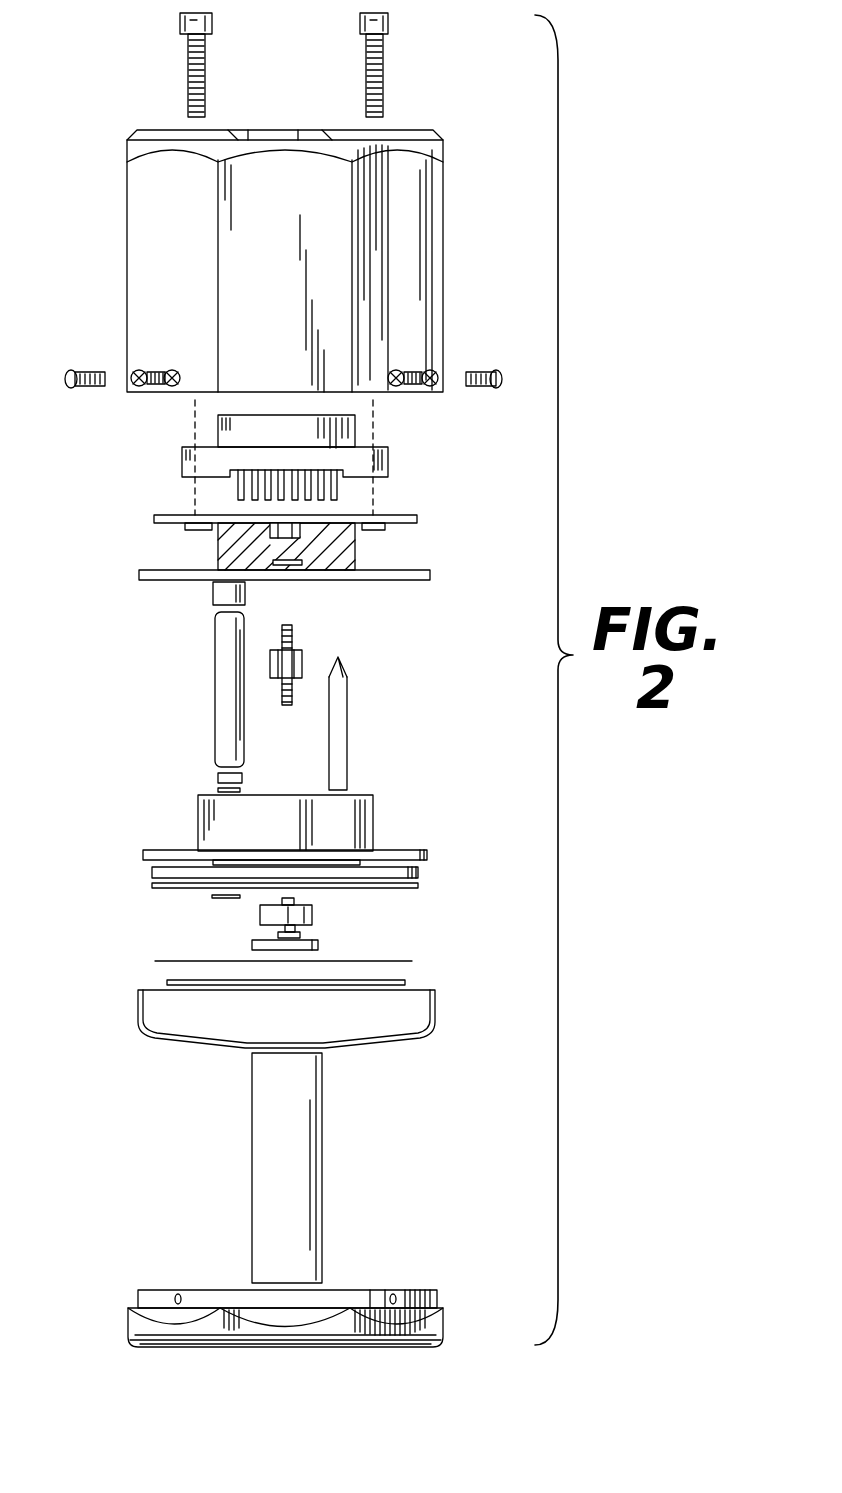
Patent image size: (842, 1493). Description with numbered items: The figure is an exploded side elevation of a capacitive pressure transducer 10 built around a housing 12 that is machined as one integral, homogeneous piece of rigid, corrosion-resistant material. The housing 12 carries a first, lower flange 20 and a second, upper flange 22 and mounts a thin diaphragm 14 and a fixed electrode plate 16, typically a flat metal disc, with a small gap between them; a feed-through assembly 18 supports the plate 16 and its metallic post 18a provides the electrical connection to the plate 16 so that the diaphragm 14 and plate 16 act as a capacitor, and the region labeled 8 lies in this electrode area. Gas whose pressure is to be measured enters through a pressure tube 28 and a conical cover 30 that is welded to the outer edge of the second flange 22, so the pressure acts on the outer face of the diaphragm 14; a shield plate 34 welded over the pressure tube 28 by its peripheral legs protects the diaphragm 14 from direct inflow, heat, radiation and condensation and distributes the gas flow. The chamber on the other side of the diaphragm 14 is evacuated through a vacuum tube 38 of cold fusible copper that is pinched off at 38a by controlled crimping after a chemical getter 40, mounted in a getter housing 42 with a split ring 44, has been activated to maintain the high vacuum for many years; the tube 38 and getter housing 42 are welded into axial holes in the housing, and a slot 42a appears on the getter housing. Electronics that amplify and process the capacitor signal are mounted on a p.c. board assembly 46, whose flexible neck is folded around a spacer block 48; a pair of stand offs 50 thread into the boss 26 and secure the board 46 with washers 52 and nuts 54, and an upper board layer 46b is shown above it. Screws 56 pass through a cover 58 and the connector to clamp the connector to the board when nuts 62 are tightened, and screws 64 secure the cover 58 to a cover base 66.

The light source assembly 8 is at (250, 952).
The capacitive pressure transducer 10 is at (78, 220).
The housing 12 is at (415, 815).
The diaphragm 14 is at (400, 958).
The fixed electrode plate 16 is at (318, 945).
The feed-through assembly 18 is at (333, 923).
The metallic post 18a is at (294, 900).
The first flange 20 is at (418, 874).
The second flange 22 is at (428, 856).
The boss 26 is at (373, 798).
The pressure tube 28 is at (320, 1145).
The cover 30 is at (435, 1030).
The shield plate 34 is at (410, 982).
The vacuum tube 38 is at (348, 724).
The pinch-off 38a is at (345, 667).
The chemical getter 40 is at (216, 777).
The getter housing 42 is at (218, 687).
The rod slot 42a is at (215, 897).
The split ring 44 is at (244, 790).
The p.c. board assembly 46 is at (425, 575).
The upper insulating plate 46b is at (413, 517).
The spacer block 48 is at (392, 443).
The stand offs 50 is at (306, 660).
The washers 52 is at (288, 568).
The nuts 54 is at (300, 532).
The screws 56 is at (180, 28).
The cover 58 is at (430, 244).
The nuts 62 is at (188, 527).
The screws 64 is at (93, 370).
The cover base 66 is at (415, 1305).